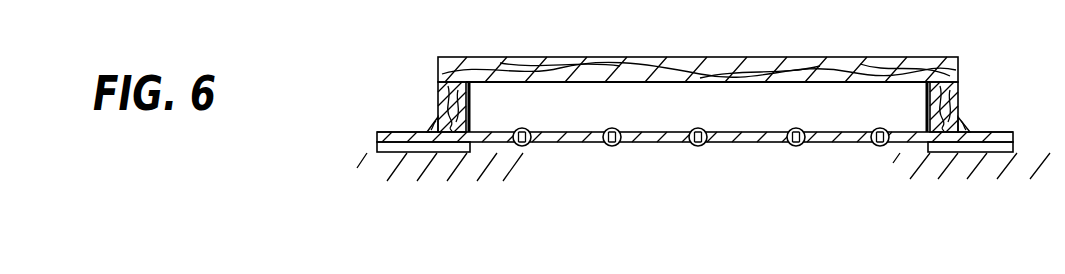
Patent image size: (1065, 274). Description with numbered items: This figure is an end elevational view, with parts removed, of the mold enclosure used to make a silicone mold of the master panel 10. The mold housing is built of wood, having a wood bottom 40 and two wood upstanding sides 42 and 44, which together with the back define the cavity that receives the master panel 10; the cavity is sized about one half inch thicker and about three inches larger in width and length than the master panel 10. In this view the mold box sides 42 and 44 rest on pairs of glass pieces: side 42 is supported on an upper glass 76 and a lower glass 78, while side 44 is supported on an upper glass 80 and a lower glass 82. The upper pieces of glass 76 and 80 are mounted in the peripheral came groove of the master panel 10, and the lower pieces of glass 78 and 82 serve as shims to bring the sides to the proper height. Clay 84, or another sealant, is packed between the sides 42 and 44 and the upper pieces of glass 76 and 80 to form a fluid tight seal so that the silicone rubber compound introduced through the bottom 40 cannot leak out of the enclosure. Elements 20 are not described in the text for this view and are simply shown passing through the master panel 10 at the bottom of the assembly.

The master panel 10 is at (657, 144).
The plated through-holes 20 is at (793, 146).
The wood bottom 40 is at (858, 57).
The upstanding side 42 is at (959, 94).
The upstanding side 44 is at (438, 93).
The upper glass 76 is at (1008, 132).
The lower glass 78 is at (1014, 150).
The upper glass 80 is at (377, 132).
The lower glass 82 is at (377, 147).
The clay 84 is at (430, 124).